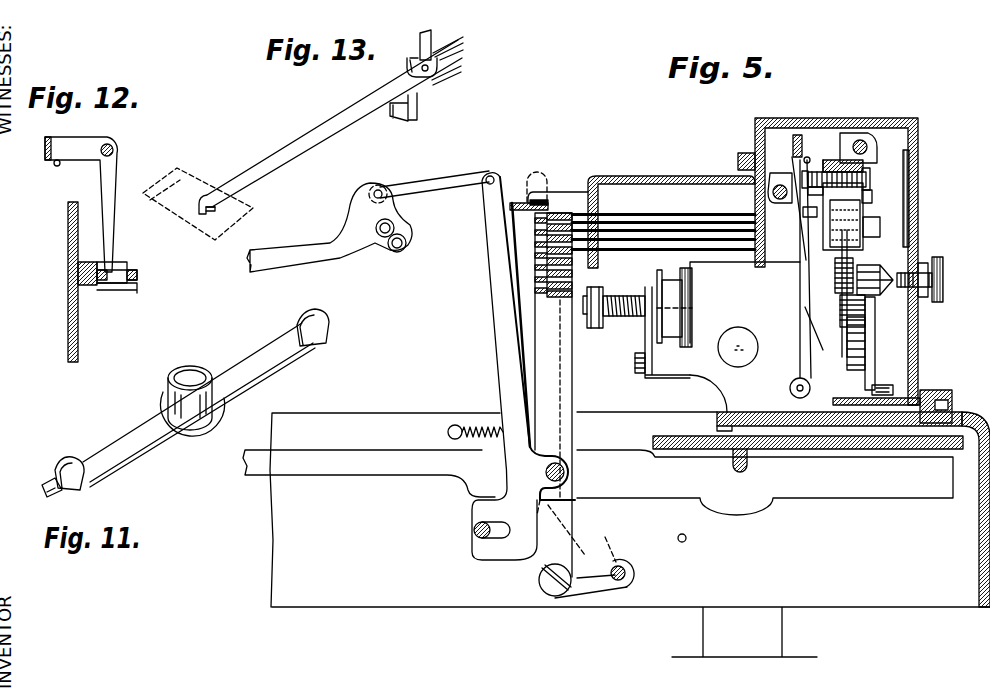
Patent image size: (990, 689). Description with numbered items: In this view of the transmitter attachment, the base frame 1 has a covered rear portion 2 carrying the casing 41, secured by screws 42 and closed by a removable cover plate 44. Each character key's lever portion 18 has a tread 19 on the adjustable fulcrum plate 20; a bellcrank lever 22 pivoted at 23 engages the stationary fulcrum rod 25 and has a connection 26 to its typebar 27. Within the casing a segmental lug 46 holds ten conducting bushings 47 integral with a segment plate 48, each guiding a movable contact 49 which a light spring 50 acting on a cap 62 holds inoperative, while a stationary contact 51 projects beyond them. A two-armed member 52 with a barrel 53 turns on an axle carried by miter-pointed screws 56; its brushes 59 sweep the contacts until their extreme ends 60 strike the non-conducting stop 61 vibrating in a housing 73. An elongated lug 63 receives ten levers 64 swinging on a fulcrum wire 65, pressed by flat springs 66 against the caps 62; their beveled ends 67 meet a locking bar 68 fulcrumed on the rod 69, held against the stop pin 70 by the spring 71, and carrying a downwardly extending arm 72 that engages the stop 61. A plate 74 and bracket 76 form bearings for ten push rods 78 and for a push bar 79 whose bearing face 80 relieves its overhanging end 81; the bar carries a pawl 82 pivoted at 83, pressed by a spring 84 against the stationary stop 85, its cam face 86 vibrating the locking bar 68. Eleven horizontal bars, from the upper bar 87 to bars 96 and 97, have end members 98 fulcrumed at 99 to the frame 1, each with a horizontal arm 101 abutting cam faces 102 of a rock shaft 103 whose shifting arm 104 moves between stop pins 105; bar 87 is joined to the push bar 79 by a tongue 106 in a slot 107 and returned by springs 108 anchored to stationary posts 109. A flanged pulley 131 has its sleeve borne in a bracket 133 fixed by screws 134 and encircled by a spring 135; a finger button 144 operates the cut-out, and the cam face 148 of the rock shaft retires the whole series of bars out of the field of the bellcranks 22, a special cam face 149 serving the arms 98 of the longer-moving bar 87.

In FIG. 5, the base frame 1 is at (350, 413).
In FIG. 5, the covered rear portion 2 is at (773, 450).
In FIG. 5, the lever portion 18 is at (369, 473).
In FIG. 5, the tread 19 is at (893, 458).
In FIG. 5, the adjustable fulcrum plate 20 is at (704, 452).
In FIG. 5, the bellcrank lever 22 is at (486, 312).
In FIG. 5, the pivot 23 is at (568, 471).
In FIG. 5, the stationary fulcrum rod 25 is at (472, 530).
In FIG. 5, the connection 26 is at (434, 179).
In FIG. 5, the typebar 27 is at (329, 227).
In FIG. 12, the casing 41 is at (79, 349).
In FIG. 5, the casing 41 is at (688, 337).
In FIG. 5, the screws 42 is at (938, 390).
In FIG. 5, the sectional cover plate 44 is at (918, 350).
In FIG. 5, the segmental lug 46 is at (838, 160).
In FIG. 5, the bushings 47 is at (858, 139).
In FIG. 5, the segment plate 48 is at (868, 164).
In FIG. 5, the movable contact 49 is at (871, 180).
In FIG. 5, the spring 50 is at (814, 198).
In FIG. 5, the stationary contact 51 is at (875, 222).
In FIG. 11, the two-armed member 52 is at (199, 405).
In FIG. 5, the two-armed member 52 is at (893, 263).
In FIG. 11, the barrel 53 is at (197, 370).
In FIG. 5, the barrel 53 is at (880, 298).
In FIG. 5, the miter-pointed screws 56 is at (947, 293).
In FIG. 11, the wiper or brush 59 is at (330, 322).
In FIG. 12, the extreme ends 60 is at (138, 288).
In FIG. 11, the extreme ends 60 is at (48, 483).
In FIG. 12, the insulated stop 61 is at (132, 268).
In FIG. 5, the cap 62 is at (837, 162).
In FIG. 5, the elongated lug 63 is at (820, 410).
In FIG. 5, the levers 64 is at (800, 286).
In FIG. 5, the fulcrum wire 65 is at (789, 388).
In FIG. 5, the flat springs 66 is at (805, 326).
In FIG. 5, the beveled ends 67 is at (792, 157).
In FIG. 12, the locking bar 68 is at (46, 142).
In FIG. 5, the locking bar 68 is at (797, 135).
In FIG. 12, the stationary rod 69 is at (113, 145).
In FIG. 5, the stationary rod 69 is at (866, 142).
In FIG. 12, the stop pin 70 is at (57, 166).
In FIG. 5, the stop pin 70 is at (815, 149).
In FIG. 5, the spring 71 is at (872, 145).
In FIG. 12, the downwardly extending arm 72 is at (112, 180).
In FIG. 5, the downwardly extending arm 72 is at (866, 250).
In FIG. 12, the housing 73 is at (92, 290).
In FIG. 5, the plate 74 is at (755, 129).
In FIG. 5, the bracket 76 is at (693, 177).
In FIG. 5, the push rods 78 is at (633, 251).
In FIG. 13, the push bar 79 is at (301, 138).
In FIG. 5, the push bar 79 is at (567, 192).
In FIG. 13, the bearing face 80 is at (461, 75).
In FIG. 5, the bearing face 80 is at (813, 217).
In FIG. 13, the overhanging end 81 is at (464, 40).
In FIG. 13, the pawl 82 is at (420, 45).
In FIG. 5, the pawl 82 is at (780, 173).
In FIG. 13, the pivot 83 is at (422, 85).
In FIG. 13, the spring 84 is at (463, 55).
In FIG. 13, the stationary stop 85 is at (407, 64).
In FIG. 13, the cam face 86 is at (428, 32).
In FIG. 13, the upper bar 87 is at (180, 205).
In FIG. 5, the upper bar 87 is at (515, 200).
In FIG. 5, the horizontal bar 96 is at (574, 284).
In FIG. 5, the horizontal bar 97 is at (567, 297).
In FIG. 5, the vertically disposed members 98 is at (553, 395).
In FIG. 5, the fulcrum 99 is at (540, 584).
In FIG. 5, the horizontal arm 101 is at (593, 593).
In FIG. 5, the cam faces 102 is at (627, 587).
In FIG. 5, the rock shaft 103 is at (612, 539).
In FIG. 5, the shifting arm 104 is at (565, 602).
In FIG. 5, the stop pins 105 is at (687, 538).
In FIG. 13, the tongue 106 is at (225, 209).
In FIG. 13, the slot 107 is at (200, 178).
In FIG. 5, the spring 108 is at (482, 426).
In FIG. 5, the stationary posts 109 is at (447, 432).
In FIG. 5, the flanged pulley 131 is at (667, 279).
In FIG. 5, the bracket 133 is at (650, 380).
In FIG. 5, the screws 134 is at (635, 365).
In FIG. 5, the spring 135 is at (623, 318).
In FIG. 5, the finger button 144 is at (740, 333).
In FIG. 5, the cam face 148 is at (630, 573).
In FIG. 5, the special cam face 149 is at (630, 570).